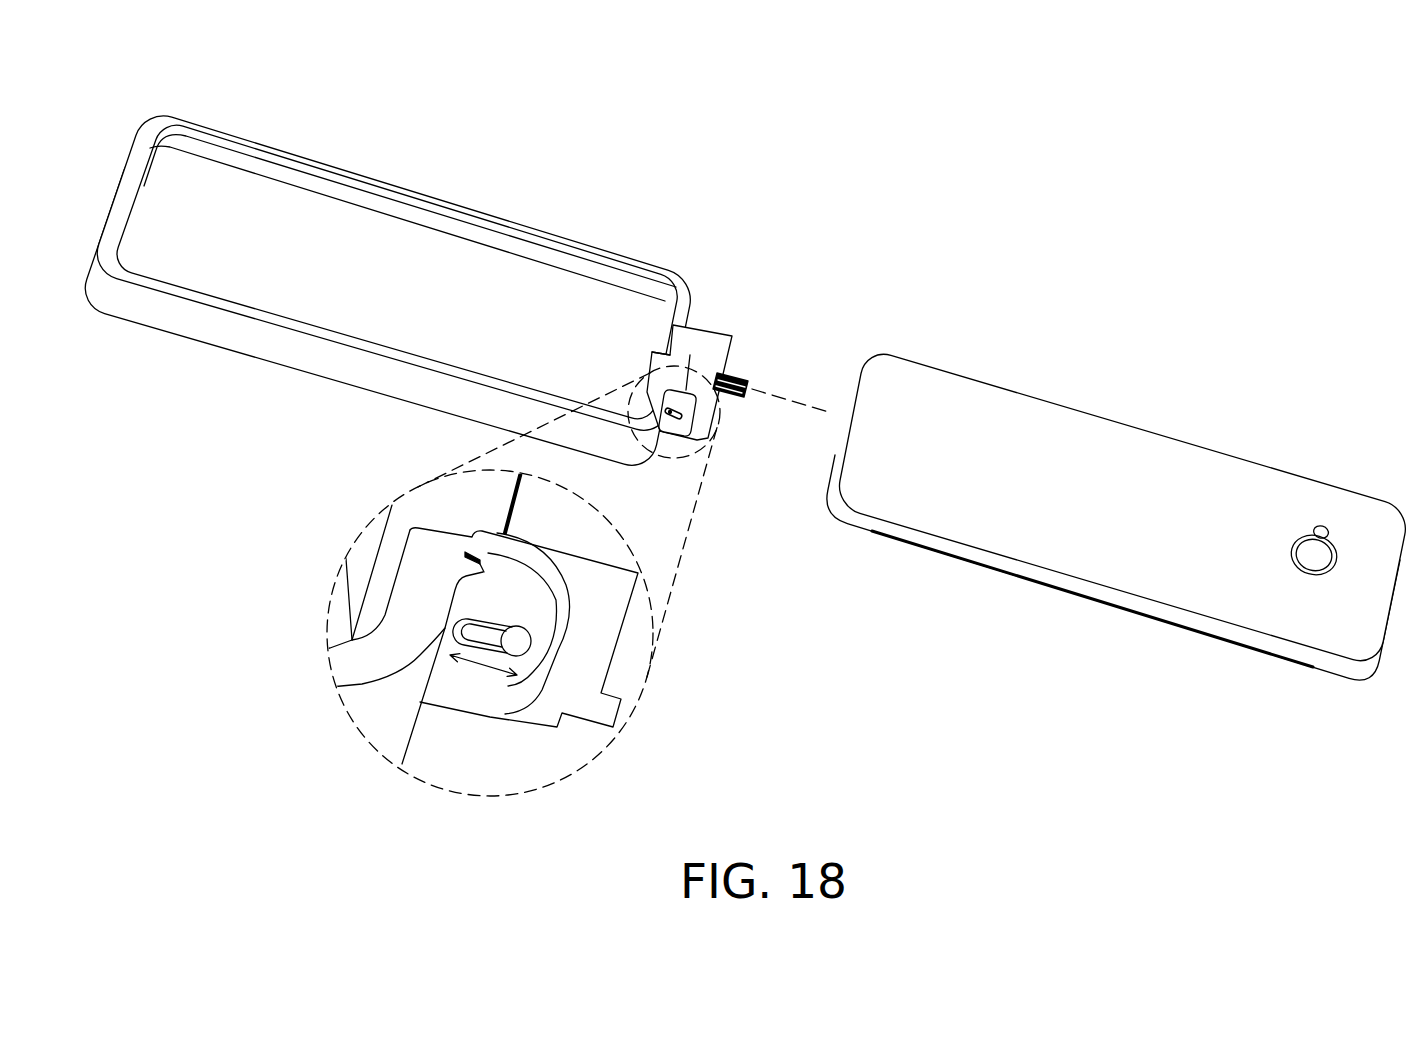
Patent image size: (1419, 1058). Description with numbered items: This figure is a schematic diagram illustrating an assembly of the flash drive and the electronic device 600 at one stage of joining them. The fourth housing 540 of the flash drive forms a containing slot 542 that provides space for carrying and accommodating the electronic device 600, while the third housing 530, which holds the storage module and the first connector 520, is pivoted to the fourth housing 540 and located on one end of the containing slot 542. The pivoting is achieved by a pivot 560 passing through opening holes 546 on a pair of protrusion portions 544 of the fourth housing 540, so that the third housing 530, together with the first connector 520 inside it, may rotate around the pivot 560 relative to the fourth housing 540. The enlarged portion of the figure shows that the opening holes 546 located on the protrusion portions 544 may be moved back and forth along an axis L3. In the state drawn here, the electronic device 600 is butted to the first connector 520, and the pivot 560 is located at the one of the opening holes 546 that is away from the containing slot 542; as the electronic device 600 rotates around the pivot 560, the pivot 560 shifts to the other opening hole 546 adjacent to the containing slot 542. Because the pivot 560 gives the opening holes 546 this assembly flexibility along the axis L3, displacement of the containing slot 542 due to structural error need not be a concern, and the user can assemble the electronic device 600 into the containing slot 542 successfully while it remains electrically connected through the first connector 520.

The fourth housing 540 is at (382, 183).
The containing slot 542 is at (440, 242).
The third housing 530 is at (718, 338).
The first connector 520 is at (741, 381).
The protrusion portions 544 is at (575, 630).
The opening holes 546 is at (504, 609).
The pivot 560 is at (520, 643).
The electronic device 600 is at (1049, 416).
The axis L3 is at (480, 660).